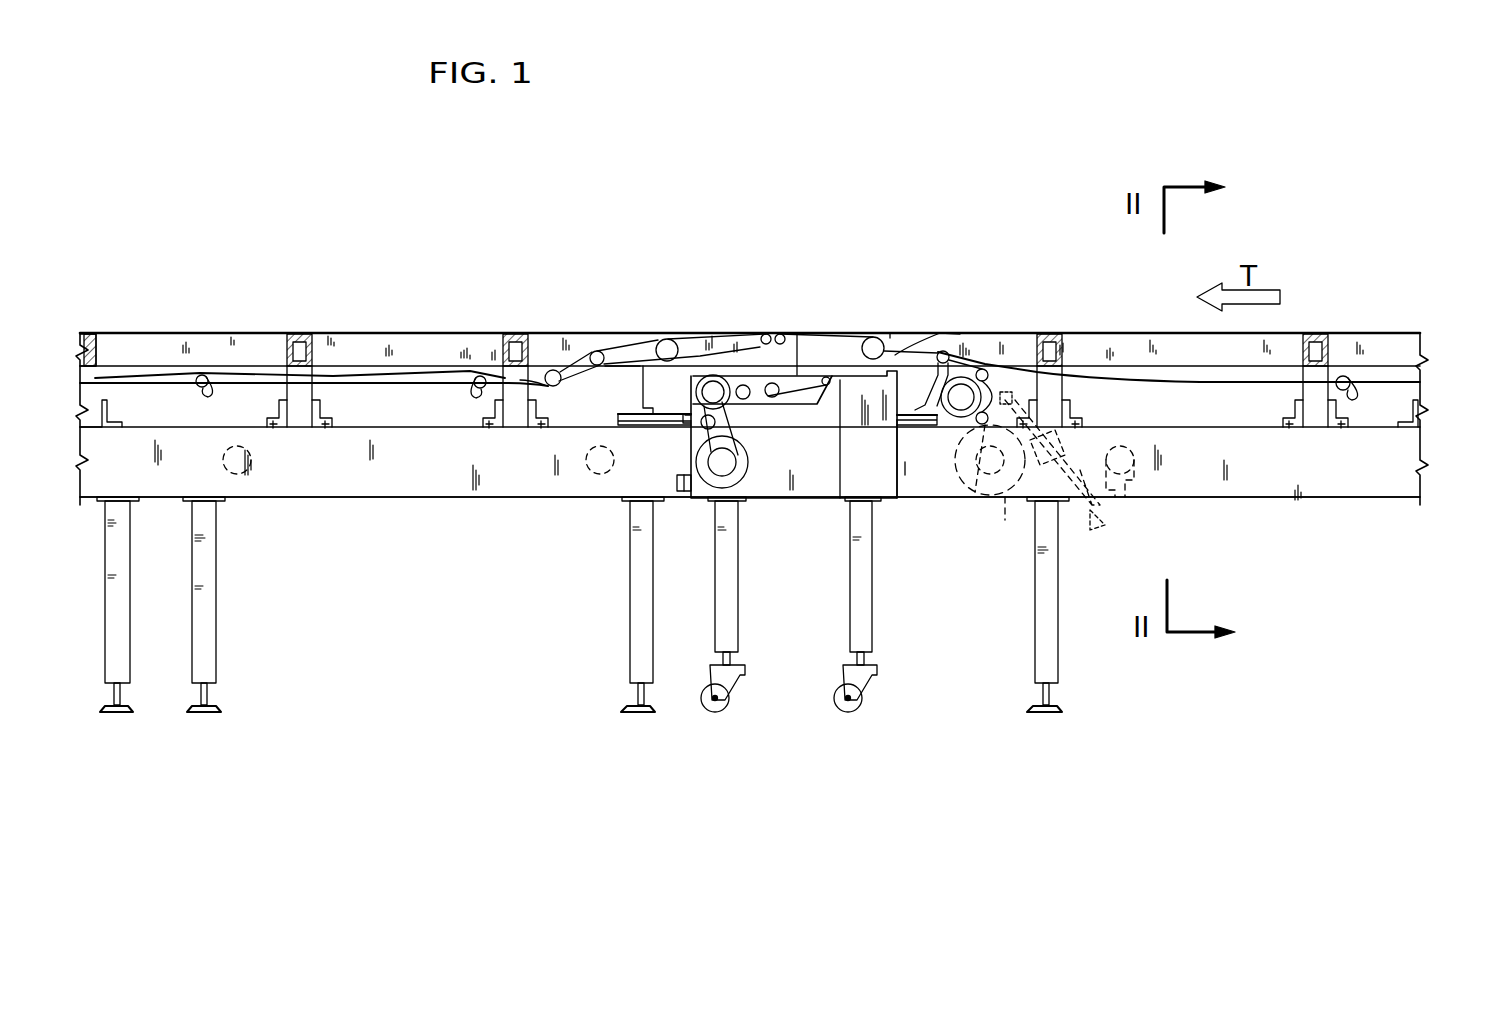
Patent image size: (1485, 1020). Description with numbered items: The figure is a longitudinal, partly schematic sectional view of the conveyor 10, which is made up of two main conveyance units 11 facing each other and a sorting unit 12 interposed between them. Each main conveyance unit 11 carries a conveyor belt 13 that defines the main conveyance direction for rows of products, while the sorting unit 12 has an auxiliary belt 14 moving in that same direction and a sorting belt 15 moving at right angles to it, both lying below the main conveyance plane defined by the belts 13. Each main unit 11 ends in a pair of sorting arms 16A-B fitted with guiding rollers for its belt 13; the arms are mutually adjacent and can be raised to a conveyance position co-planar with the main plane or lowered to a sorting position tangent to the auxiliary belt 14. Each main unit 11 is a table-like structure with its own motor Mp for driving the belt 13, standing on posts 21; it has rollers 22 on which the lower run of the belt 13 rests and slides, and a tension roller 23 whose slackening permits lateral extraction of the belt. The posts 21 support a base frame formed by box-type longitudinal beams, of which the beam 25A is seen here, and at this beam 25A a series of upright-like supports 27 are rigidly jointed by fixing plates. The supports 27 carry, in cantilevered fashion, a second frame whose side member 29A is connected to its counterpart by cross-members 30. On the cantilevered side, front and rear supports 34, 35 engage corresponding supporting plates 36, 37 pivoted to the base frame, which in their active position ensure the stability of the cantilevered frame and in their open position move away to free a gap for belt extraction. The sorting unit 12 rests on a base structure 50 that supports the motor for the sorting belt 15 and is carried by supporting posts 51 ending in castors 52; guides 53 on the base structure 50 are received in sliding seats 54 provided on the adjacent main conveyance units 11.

The conveyor 10 is at (900, 265).
The main conveyance unit 11 is at (280, 525).
The sorting unit 12 is at (890, 512).
The conveyor belt 13 is at (585, 333).
The auxiliary belt 14 is at (797, 375).
The sorting belt 15 is at (865, 385).
The sorting arms 16A-B is at (712, 343).
The posts 21 is at (207, 668).
The rollers 22 is at (204, 333).
The tension roller 23 is at (982, 370).
The longitudinal beam 25A is at (535, 490).
The upright-like supports 27 is at (300, 400).
The side member 29A is at (348, 333).
The cross-members 30 is at (292, 333).
The front support 34 is at (920, 378).
The rear support 35 is at (655, 375).
The supporting plate 36 is at (932, 480).
The supporting plate 37 is at (640, 415).
The base structure 50 is at (782, 495).
The supporting posts 51 is at (730, 636).
The castors 52 is at (725, 690).
The guides 53 is at (685, 505).
The sliding seats 54 is at (668, 482).
The motor Mp is at (1003, 497).